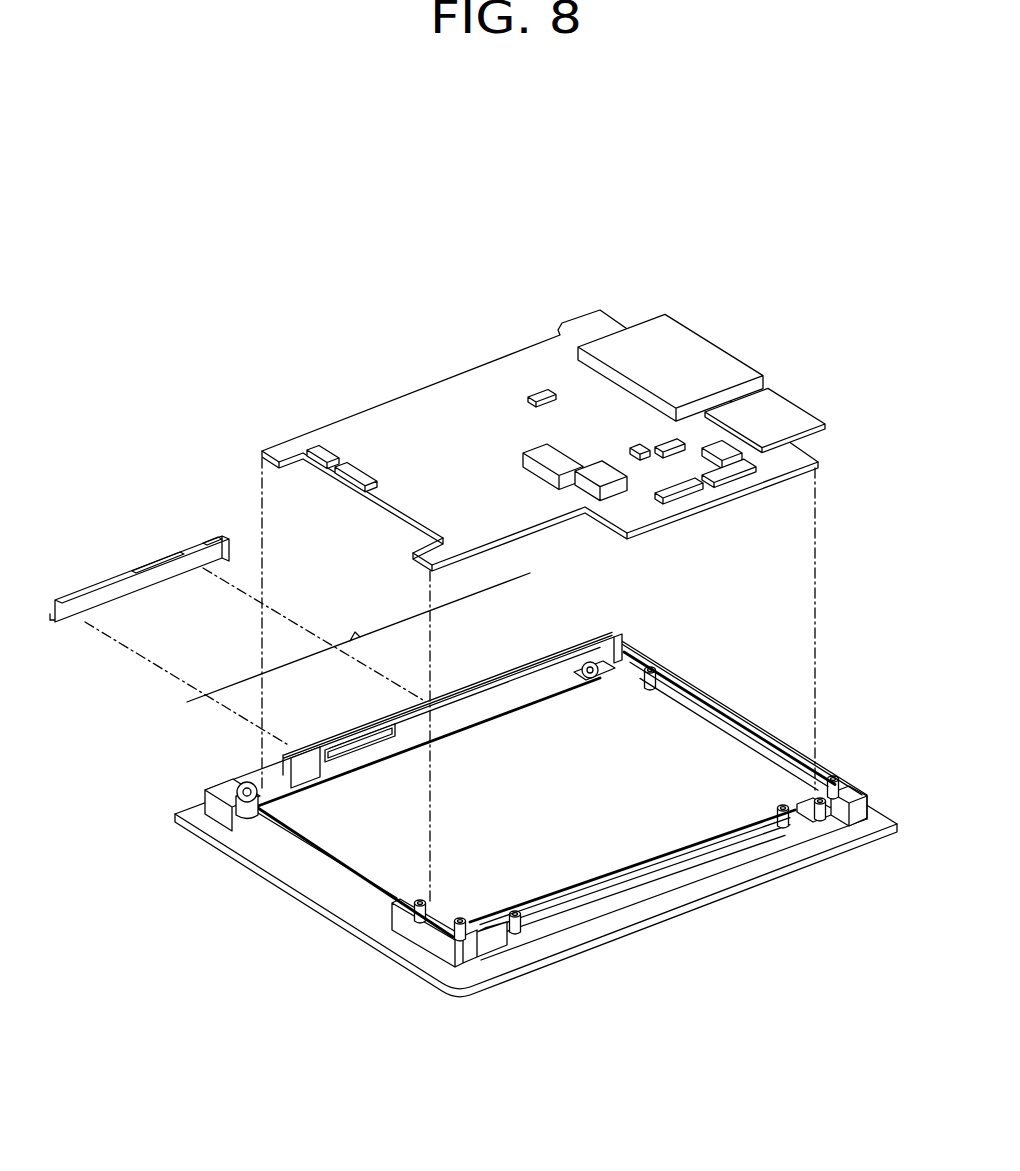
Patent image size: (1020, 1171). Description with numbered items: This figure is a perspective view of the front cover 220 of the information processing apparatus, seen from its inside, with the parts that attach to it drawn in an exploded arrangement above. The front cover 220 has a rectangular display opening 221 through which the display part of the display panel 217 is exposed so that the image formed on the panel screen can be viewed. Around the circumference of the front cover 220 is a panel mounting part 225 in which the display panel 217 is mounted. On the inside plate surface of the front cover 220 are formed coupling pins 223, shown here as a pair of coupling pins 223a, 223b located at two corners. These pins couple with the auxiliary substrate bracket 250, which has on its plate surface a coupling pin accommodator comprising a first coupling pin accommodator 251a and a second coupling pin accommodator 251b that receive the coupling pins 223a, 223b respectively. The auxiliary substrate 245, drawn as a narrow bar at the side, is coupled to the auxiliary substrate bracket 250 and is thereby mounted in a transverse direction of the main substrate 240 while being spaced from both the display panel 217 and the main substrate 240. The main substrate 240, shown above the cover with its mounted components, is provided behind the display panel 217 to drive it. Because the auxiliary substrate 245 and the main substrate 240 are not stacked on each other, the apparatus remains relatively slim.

The display panel 217 is at (537, 880).
The front cover 220 is at (660, 913).
The display opening 221 is at (757, 765).
The coupling pin 223 is at (370, 626).
The coupling pin 223a is at (242, 790).
The coupling pin 223b is at (580, 660).
The panel mounting part 225 is at (733, 733).
The main substrate 240 is at (427, 387).
The auxiliary substrate 245 is at (157, 568).
The auxiliary substrate bracket 250 is at (267, 777).
The coupling pin accommodator 251a is at (248, 817).
The coupling pin accommodator 251b is at (606, 662).